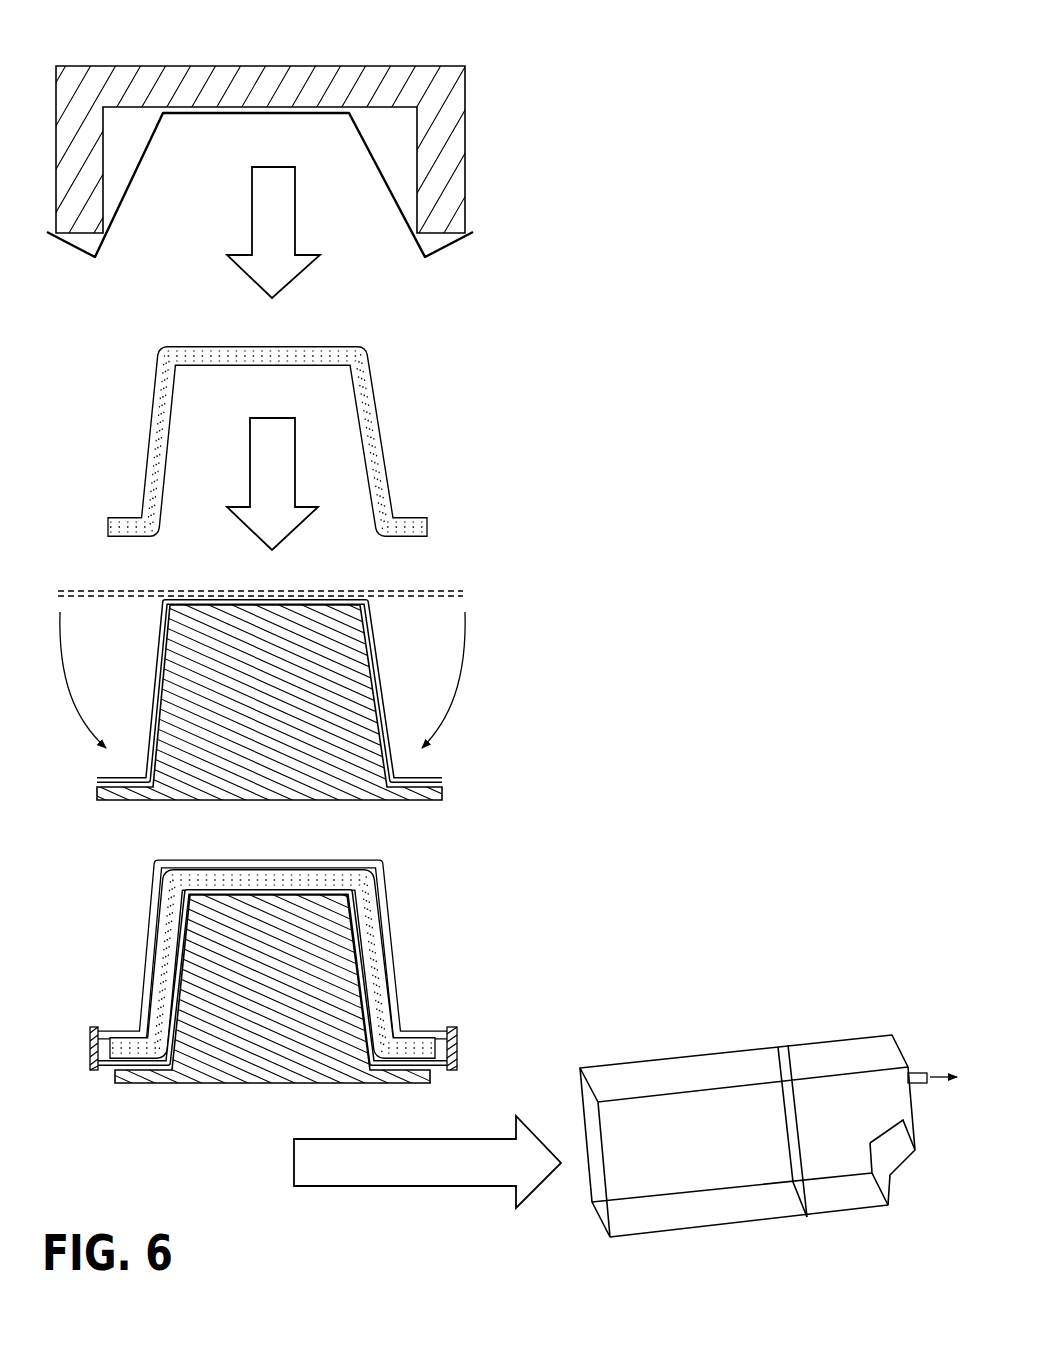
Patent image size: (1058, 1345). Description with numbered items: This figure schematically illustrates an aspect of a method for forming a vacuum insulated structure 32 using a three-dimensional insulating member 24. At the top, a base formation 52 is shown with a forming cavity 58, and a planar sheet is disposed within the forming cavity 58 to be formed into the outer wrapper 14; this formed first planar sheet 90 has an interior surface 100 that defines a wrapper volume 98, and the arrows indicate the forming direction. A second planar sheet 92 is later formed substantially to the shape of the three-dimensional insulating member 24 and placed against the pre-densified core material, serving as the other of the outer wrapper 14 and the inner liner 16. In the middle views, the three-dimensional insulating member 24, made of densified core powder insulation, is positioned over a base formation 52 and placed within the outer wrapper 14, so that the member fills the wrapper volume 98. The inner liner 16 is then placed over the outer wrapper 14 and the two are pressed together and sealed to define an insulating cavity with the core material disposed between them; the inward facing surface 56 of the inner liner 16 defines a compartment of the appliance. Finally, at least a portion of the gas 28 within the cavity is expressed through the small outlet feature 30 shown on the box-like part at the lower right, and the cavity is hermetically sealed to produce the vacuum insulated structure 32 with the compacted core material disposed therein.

The outer wrapper 14 is at (398, 204).
The inner liner 16 is at (373, 641).
The three-dimensional insulating member 24 is at (386, 414).
The gas 28 is at (950, 1072).
The tab 30 is at (915, 1070).
The vacuum insulated structure 32 is at (593, 1232).
The base formation 52 is at (440, 66).
The inward facing surface 56 is at (104, 133).
The forming cavity 58 is at (392, 108).
The first planar sheet 90 is at (425, 592).
The second planar sheet 92 is at (462, 245).
The wrapper volume 98 is at (166, 208).
The interior surface 100 is at (150, 144).